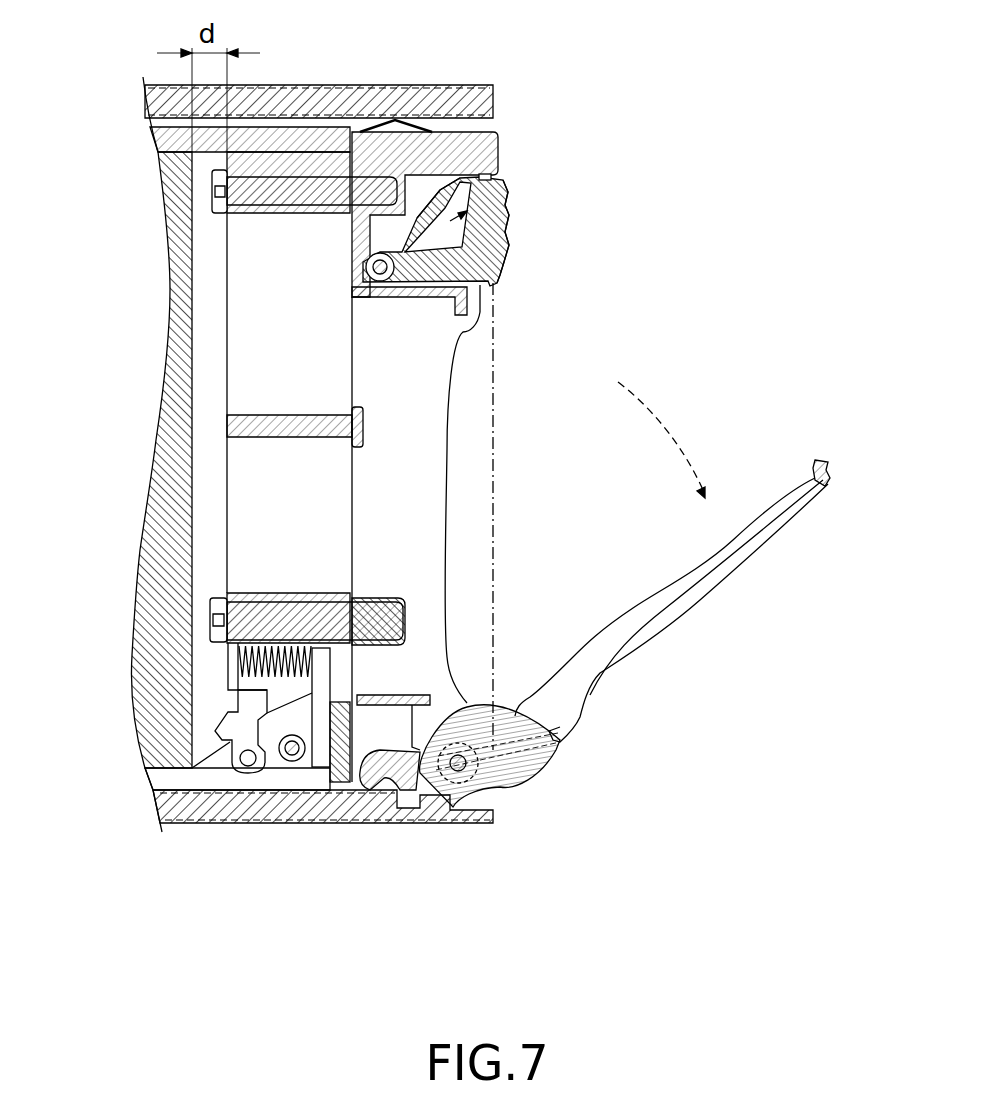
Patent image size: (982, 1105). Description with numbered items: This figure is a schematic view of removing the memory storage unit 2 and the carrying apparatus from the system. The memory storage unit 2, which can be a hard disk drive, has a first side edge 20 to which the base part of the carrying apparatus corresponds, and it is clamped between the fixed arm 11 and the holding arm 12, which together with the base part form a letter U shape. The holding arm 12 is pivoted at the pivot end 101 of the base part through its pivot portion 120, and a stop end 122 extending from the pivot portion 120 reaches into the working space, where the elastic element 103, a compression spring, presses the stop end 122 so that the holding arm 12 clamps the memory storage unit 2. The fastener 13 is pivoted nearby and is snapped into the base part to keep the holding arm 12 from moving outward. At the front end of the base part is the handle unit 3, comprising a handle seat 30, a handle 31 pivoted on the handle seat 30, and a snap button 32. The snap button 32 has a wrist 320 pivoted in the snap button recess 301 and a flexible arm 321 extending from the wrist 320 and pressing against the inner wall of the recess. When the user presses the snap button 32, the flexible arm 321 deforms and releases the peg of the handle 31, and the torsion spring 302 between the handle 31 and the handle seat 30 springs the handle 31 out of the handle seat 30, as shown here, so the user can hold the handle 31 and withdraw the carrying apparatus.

The memory storage unit 2 is at (173, 455).
The fixed arm 11 is at (170, 138).
The holding arm 12 is at (170, 780).
The fastener 13 is at (241, 776).
The first side edge 20 is at (193, 302).
The handle seat 30 is at (397, 365).
The handle 31 is at (652, 618).
The snap button 32 is at (508, 235).
The pivot end 101 is at (482, 178).
The elastic element 103 is at (228, 657).
The pivot portion 120 is at (310, 753).
The stop end 122 is at (320, 668).
The snap button recess 301 is at (508, 203).
The torsion spring 302 is at (537, 772).
The wrist 320 is at (378, 253).
The flexible arm 321 is at (420, 178).
The handle unit 3 is at (721, 590).